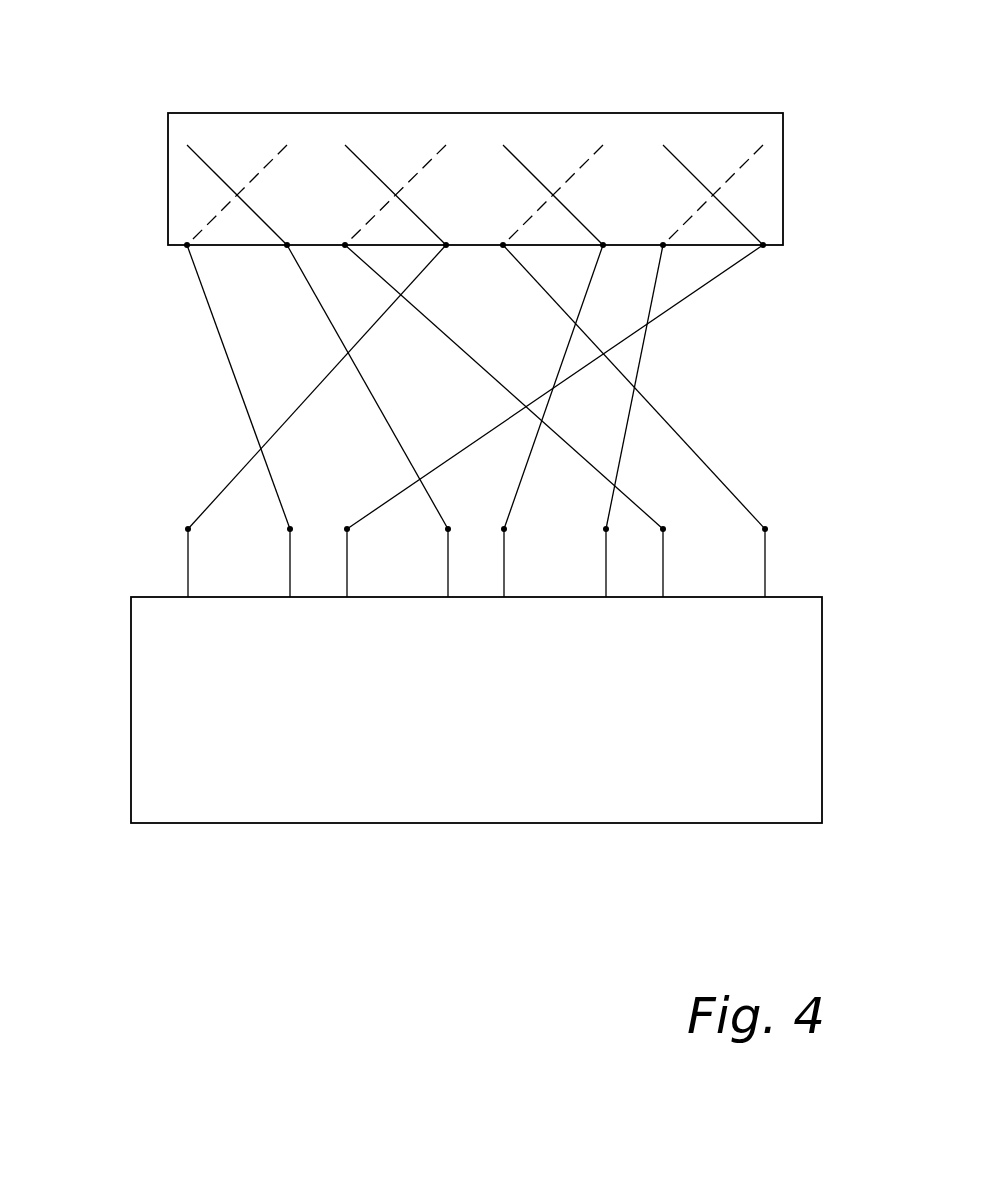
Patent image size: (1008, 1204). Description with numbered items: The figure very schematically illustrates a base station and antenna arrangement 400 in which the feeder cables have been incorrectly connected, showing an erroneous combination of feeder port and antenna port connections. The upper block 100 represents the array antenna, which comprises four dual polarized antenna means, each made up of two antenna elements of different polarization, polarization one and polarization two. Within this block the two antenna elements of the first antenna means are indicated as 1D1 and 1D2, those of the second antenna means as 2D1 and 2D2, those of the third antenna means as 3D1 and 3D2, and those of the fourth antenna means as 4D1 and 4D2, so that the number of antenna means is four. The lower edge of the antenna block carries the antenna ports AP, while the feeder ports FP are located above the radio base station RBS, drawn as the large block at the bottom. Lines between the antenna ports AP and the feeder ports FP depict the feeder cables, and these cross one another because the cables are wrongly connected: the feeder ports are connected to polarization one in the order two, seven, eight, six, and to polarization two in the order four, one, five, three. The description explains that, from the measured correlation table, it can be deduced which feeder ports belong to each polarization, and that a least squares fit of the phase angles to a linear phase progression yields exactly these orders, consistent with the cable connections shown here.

The optical delay/coupling unit 100 is at (783, 177).
The antenna arrangement 400 is at (182, 944).
The first delay path of first pair 1D1 is at (287, 145).
The second delay path of first pair 1D2 is at (187, 145).
The first delay path of second pair 2D1 is at (446, 145).
The second delay path of second pair 2D2 is at (345, 145).
The first delay path of third pair 3D1 is at (603, 145).
The second delay path of third pair 3D2 is at (503, 145).
The first delay path of fourth pair 4D1 is at (763, 145).
The second delay path of fourth pair 4D2 is at (663, 145).
The antenna ports AP is at (157, 268).
The feeder ports FP is at (157, 537).
The radio base station RBS is at (248, 654).